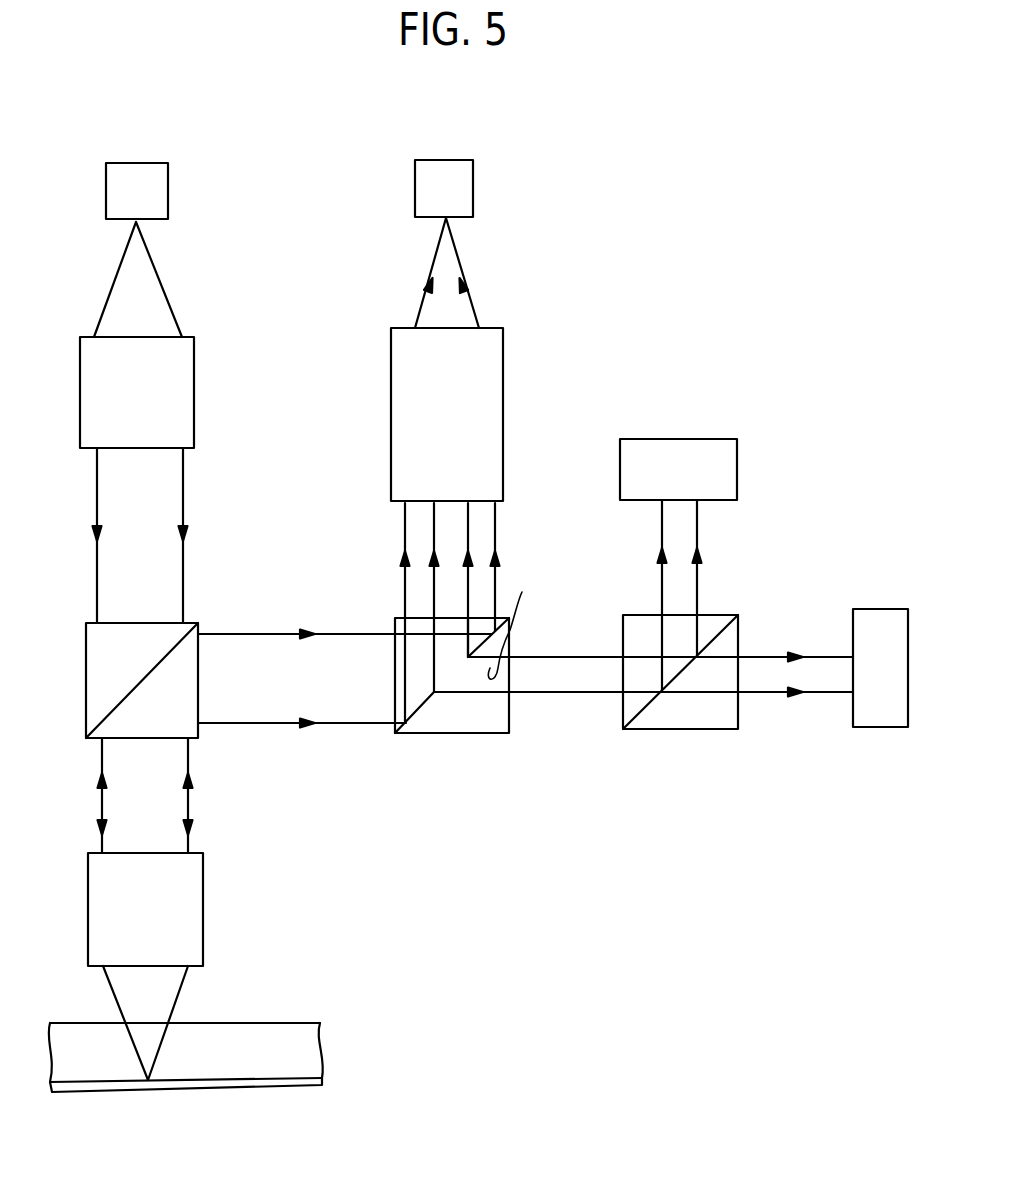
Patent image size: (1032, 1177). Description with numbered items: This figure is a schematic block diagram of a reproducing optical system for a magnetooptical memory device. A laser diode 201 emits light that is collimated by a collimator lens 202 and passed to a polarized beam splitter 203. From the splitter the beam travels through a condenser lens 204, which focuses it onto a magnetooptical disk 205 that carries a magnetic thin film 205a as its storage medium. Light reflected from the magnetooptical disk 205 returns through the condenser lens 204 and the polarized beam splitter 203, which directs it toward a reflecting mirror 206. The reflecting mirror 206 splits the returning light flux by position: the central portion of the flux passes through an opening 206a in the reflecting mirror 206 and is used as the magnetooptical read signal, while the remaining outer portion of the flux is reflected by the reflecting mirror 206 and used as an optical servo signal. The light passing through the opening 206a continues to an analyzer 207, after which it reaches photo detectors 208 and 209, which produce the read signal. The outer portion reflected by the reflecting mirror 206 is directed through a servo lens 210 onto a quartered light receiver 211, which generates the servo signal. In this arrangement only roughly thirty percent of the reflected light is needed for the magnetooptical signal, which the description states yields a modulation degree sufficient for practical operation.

The laser diode 201 is at (168, 165).
The collimator lens 202 is at (194, 412).
The polarized beam splitter 203 is at (198, 623).
The condenser lens 204 is at (203, 938).
The magnetooptical disk 205 is at (308, 1023).
The magnetic thin film 205a is at (321, 1087).
The reflecting mirror 206 is at (463, 712).
The opening in the reflecting mirror 206a is at (546, 627).
The analyzer 207 is at (688, 729).
The photo detector 208 is at (722, 403).
The photo detector 209 is at (878, 609).
The servo lens 210 is at (503, 376).
The quartered light receiver 211 is at (473, 173).